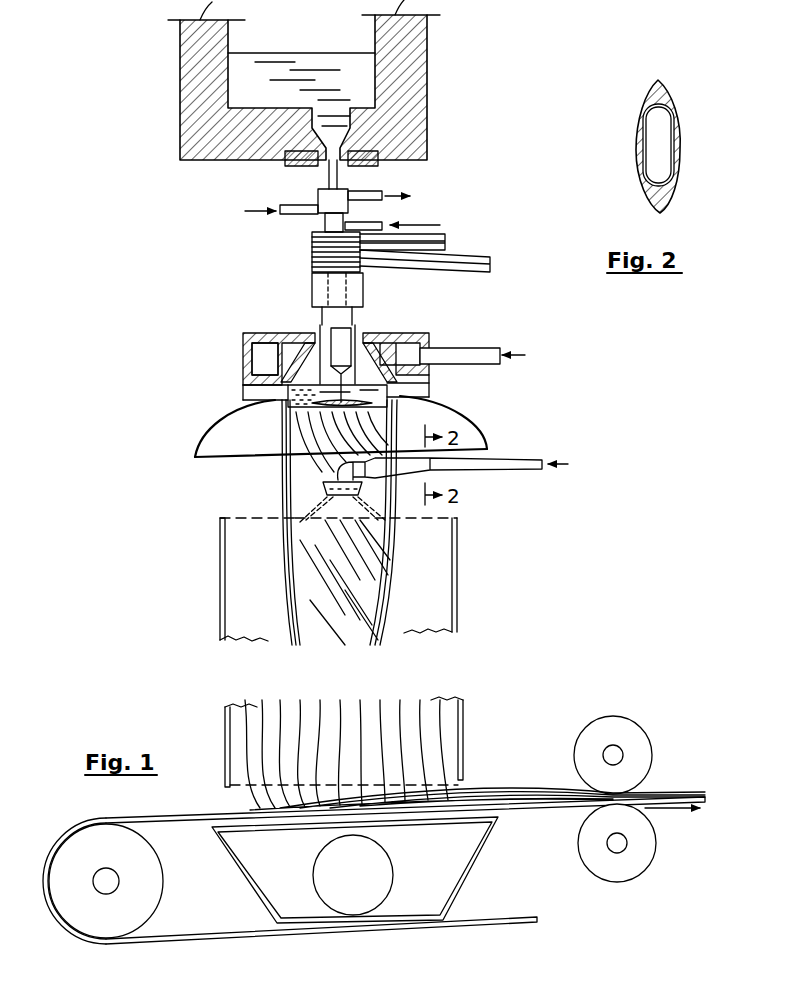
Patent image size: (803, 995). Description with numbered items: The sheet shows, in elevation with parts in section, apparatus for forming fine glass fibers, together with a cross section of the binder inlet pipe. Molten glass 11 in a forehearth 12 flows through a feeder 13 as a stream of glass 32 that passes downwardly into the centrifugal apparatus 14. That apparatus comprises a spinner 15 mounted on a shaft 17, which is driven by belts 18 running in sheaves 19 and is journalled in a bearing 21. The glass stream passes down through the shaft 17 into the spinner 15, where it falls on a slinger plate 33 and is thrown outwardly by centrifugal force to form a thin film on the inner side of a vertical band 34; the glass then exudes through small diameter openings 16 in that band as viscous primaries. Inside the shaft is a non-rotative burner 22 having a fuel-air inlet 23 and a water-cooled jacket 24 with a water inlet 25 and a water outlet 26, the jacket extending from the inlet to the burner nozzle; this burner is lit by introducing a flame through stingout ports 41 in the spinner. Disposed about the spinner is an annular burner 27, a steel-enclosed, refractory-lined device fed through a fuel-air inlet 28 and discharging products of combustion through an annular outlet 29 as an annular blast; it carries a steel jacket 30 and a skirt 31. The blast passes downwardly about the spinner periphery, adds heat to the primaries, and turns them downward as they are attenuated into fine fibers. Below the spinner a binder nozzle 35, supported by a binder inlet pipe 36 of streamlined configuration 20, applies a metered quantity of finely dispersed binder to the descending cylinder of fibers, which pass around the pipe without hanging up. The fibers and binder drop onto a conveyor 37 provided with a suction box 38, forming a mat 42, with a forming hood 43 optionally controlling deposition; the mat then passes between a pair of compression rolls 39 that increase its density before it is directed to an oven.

In FIG. 1, the molten glass 11 is at (285, 54).
In FIG. 1, the forehearth 12 is at (178, 86).
In FIG. 1, the feeder 13 is at (353, 166).
In FIG. 1, the centrifugal apparatus 14 is at (290, 318).
In FIG. 1, the spinner 15 is at (430, 393).
In FIG. 1, the small diameter openings 16 is at (290, 415).
In FIG. 1, the shaft 17 is at (352, 325).
In FIG. 1, the belts 18 is at (440, 236).
In FIG. 1, the sheaves 19 is at (312, 239).
In FIG. 1, the streamlined configuration 20 is at (433, 471).
In FIG. 2, the streamlined configuration 20 is at (644, 83).
In FIG. 1, the bearing 21 is at (312, 294).
In FIG. 1, the burner 22 is at (362, 340).
In FIG. 1, the fuel-air inlet 23 is at (376, 225).
In FIG. 1, the water-cooled jacket 24 is at (318, 193).
In FIG. 1, the water inlet 25 is at (290, 213).
In FIG. 1, the water outlet 26 is at (382, 195).
In FIG. 1, the annular burner 27 is at (256, 360).
In FIG. 1, the fuel-air inlet 28 is at (462, 344).
In FIG. 1, the annular outlet 29 is at (420, 382).
In FIG. 1, the steel jacket 30 is at (246, 336).
In FIG. 1, the skirt 31 is at (192, 458).
In FIG. 1, the stream of glass 32 is at (328, 177).
In FIG. 1, the slinger plate 33 is at (300, 428).
In FIG. 1, the vertical band 34 is at (288, 389).
In FIG. 1, the binder nozzle 35 is at (323, 481).
In FIG. 1, the binder inlet pipe 36 is at (515, 458).
In FIG. 2, the binder inlet pipe 36 is at (640, 147).
In FIG. 1, the conveyor 37 is at (169, 816).
In FIG. 1, the suction box 38 is at (474, 854).
In FIG. 1, the compression rolls 39 is at (642, 728).
In FIG. 1, the stingout ports 41 is at (430, 420).
In FIG. 1, the mat 42 is at (549, 778).
In FIG. 1, the forming hood 43 is at (220, 578).